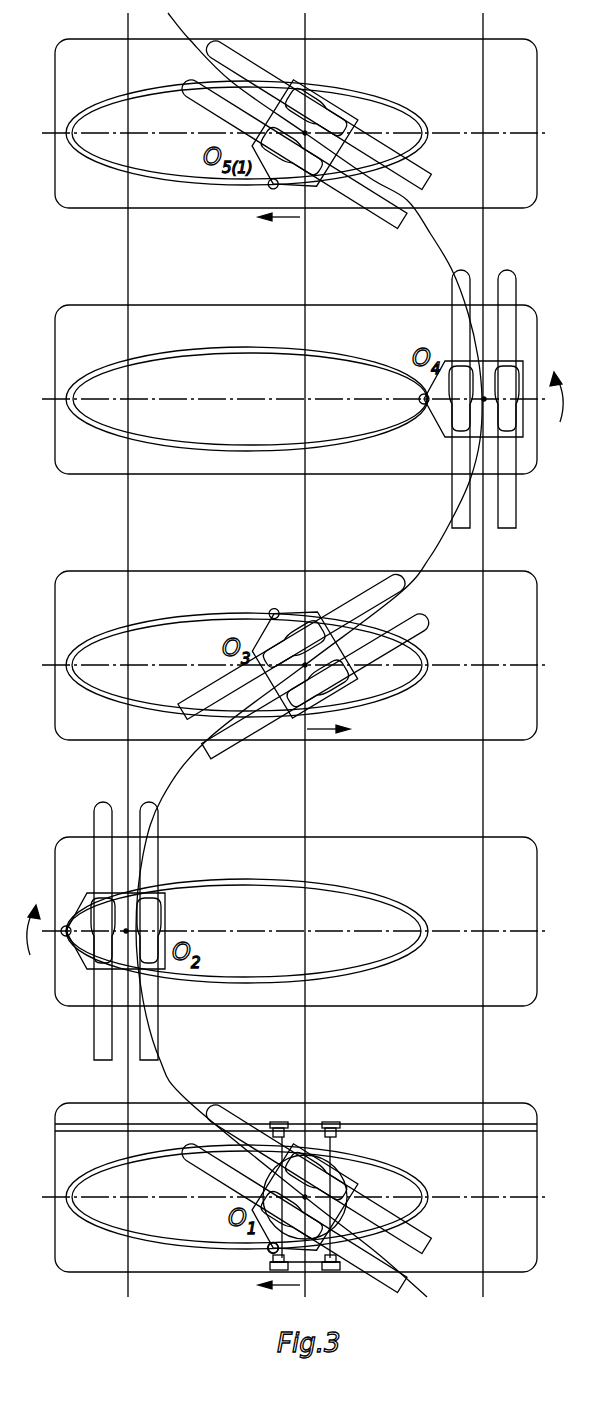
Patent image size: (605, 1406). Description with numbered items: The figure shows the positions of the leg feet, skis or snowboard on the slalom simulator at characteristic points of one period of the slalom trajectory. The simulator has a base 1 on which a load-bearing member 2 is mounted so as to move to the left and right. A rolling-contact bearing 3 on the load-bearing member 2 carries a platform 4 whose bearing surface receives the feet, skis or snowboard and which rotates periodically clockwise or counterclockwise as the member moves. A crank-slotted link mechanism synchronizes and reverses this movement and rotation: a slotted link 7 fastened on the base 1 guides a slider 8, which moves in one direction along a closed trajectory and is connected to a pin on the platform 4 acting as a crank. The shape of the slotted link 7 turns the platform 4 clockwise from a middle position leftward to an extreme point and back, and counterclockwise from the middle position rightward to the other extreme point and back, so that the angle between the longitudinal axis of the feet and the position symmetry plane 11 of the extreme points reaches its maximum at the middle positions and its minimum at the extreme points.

The base 1 is at (510, 1112).
The load-bearing member 2 is at (312, 1137).
The rolling-contact bearing 3 is at (330, 1127).
The platform 4 is at (350, 1180).
The slotted link 7 is at (177, 1240).
The slider 8 is at (270, 1251).
The position symmetry plane 11 is at (305, 1093).